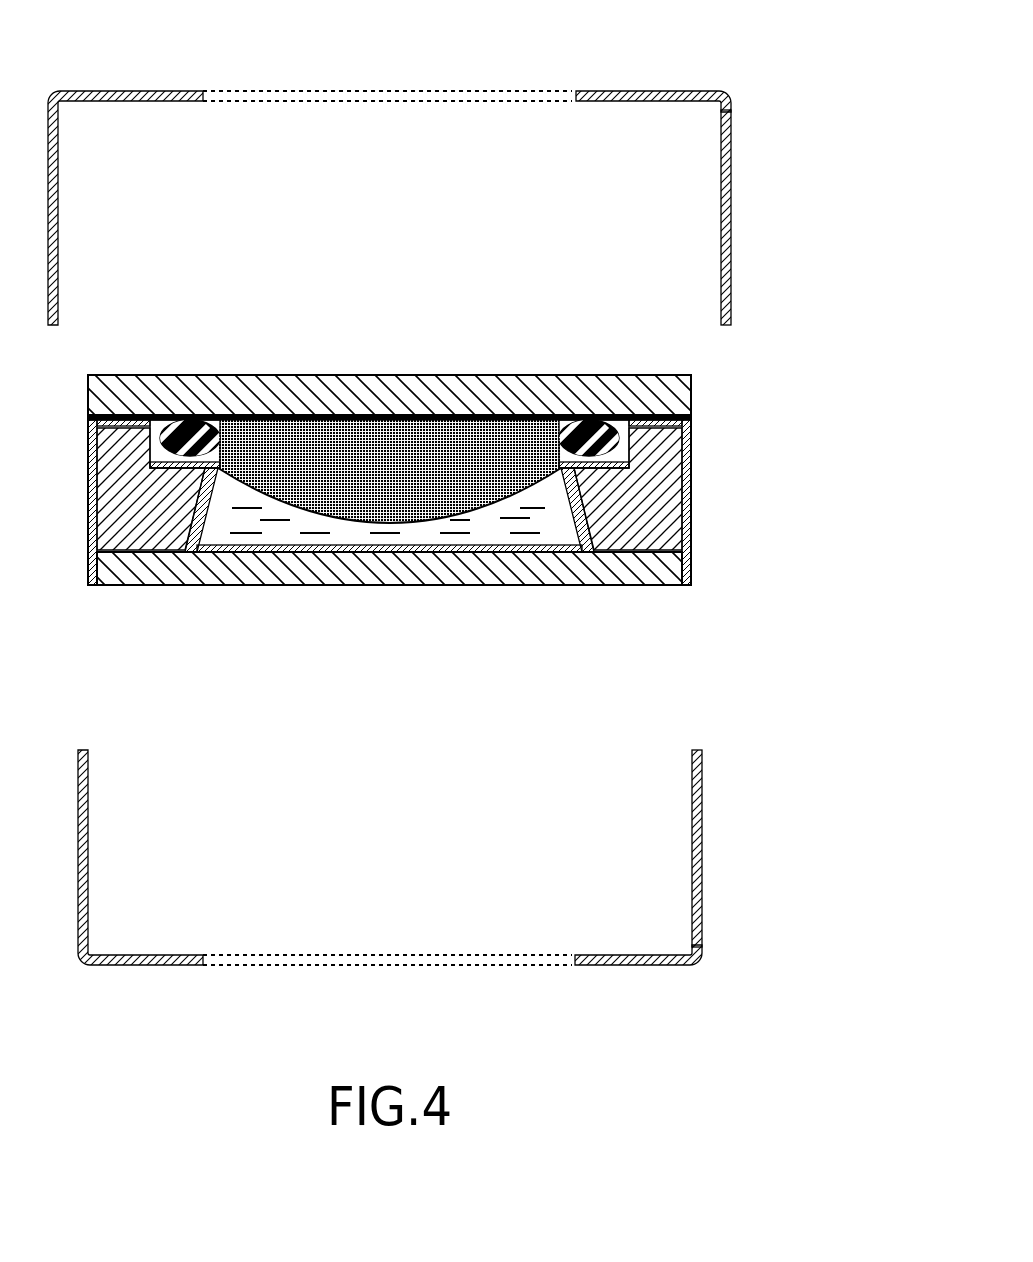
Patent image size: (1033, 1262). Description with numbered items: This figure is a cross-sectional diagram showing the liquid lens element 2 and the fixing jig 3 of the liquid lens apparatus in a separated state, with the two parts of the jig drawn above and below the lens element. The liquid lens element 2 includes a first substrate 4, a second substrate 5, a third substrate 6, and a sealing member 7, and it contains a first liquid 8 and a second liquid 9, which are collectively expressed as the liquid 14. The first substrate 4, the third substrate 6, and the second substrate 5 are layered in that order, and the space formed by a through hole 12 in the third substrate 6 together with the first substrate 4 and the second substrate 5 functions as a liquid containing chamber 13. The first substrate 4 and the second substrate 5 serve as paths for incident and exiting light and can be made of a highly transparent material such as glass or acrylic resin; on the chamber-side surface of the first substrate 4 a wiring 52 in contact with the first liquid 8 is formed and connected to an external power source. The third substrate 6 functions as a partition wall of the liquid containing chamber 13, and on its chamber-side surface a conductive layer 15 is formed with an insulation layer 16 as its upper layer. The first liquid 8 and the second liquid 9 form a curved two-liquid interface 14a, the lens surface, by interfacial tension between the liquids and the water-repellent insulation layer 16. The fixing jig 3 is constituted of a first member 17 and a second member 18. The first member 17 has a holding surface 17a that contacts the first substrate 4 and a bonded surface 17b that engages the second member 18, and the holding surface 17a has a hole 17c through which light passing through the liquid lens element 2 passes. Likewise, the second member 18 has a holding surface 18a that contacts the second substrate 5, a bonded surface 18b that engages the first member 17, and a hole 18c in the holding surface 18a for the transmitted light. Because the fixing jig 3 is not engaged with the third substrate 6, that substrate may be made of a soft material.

The liquid lens element 2 is at (440, 465).
The fixing jig 3 is at (873, 105).
The first substrate 4 is at (378, 375).
The second substrate 5 is at (373, 570).
The third substrate 6 is at (148, 520).
The sealing member 7 is at (218, 375).
The first liquid 8 is at (297, 375).
The second liquid 9 is at (260, 375).
The through hole 12 is at (198, 520).
The liquid containing chamber 13 is at (440, 525).
The liquid 14 is at (290, 320).
The two-liquid interface 14a is at (490, 500).
The conductive layer 15 is at (110, 585).
The insulation layer 16 is at (318, 549).
The first member 17 is at (452, 168).
The holding surface 17a is at (650, 91).
The bonded surface 17b is at (733, 165).
The hole 17c is at (568, 91).
The second member 18 is at (449, 873).
The holding surface 18a is at (643, 965).
The bonded surface 18b is at (704, 845).
The hole 18c is at (573, 965).
The wiring 52 is at (522, 375).